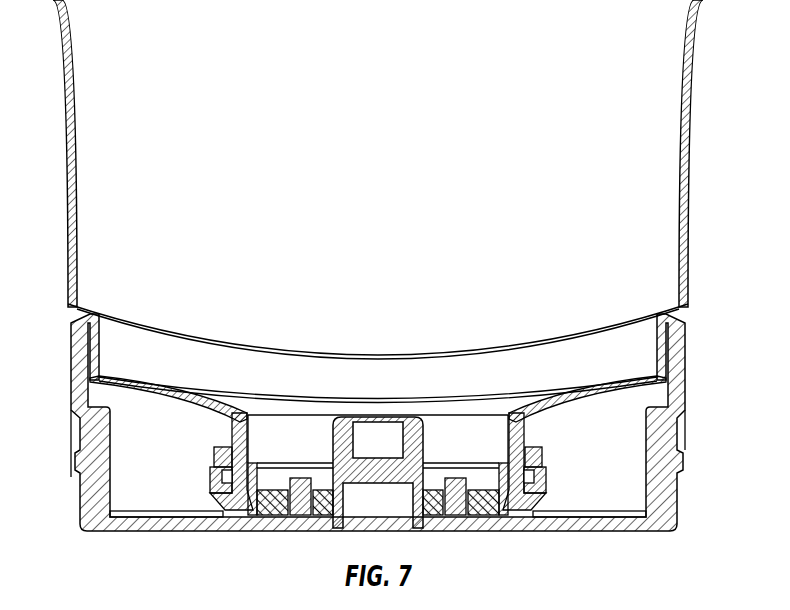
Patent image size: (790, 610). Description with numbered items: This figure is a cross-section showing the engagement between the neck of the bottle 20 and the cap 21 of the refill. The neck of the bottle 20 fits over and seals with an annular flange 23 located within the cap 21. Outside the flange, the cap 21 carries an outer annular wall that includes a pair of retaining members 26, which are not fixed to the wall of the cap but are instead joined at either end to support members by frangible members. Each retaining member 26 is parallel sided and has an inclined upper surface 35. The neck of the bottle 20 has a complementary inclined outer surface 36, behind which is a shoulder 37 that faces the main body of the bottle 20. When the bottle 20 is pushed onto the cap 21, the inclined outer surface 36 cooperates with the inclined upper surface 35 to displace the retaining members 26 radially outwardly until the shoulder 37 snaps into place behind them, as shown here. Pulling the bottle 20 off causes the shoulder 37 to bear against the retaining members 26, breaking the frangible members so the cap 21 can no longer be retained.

The bottle 20 is at (589, 148).
The cap 21 is at (665, 424).
The annular flange 23 is at (253, 471).
The retaining member 26 is at (212, 480).
The inclined upper surface 35 is at (215, 457).
The inclined outer surface 36 is at (242, 416).
The shoulder 37 is at (547, 467).